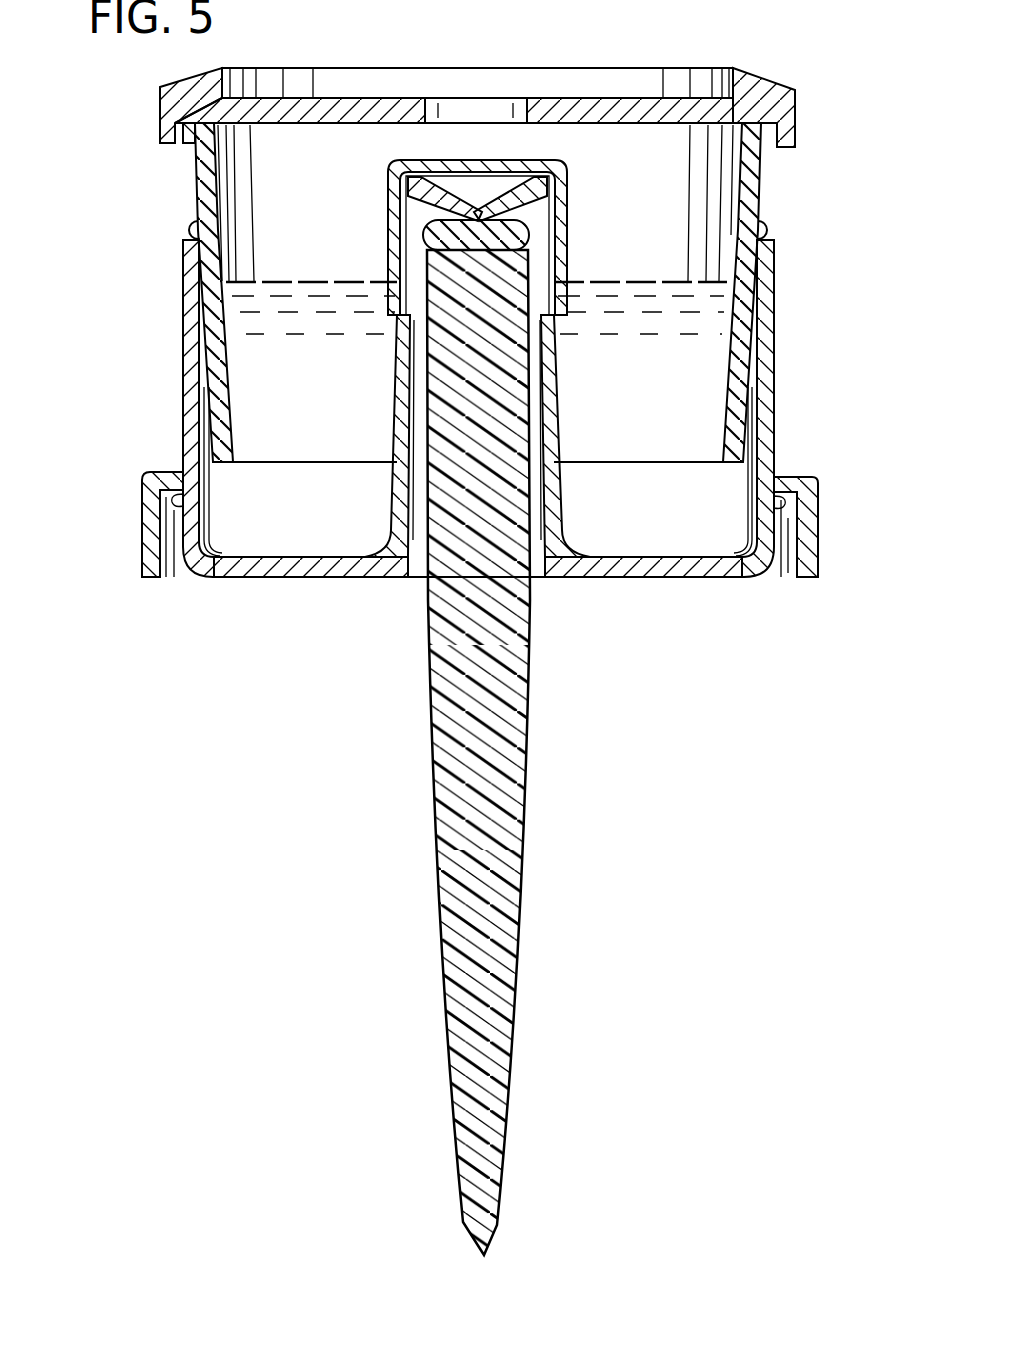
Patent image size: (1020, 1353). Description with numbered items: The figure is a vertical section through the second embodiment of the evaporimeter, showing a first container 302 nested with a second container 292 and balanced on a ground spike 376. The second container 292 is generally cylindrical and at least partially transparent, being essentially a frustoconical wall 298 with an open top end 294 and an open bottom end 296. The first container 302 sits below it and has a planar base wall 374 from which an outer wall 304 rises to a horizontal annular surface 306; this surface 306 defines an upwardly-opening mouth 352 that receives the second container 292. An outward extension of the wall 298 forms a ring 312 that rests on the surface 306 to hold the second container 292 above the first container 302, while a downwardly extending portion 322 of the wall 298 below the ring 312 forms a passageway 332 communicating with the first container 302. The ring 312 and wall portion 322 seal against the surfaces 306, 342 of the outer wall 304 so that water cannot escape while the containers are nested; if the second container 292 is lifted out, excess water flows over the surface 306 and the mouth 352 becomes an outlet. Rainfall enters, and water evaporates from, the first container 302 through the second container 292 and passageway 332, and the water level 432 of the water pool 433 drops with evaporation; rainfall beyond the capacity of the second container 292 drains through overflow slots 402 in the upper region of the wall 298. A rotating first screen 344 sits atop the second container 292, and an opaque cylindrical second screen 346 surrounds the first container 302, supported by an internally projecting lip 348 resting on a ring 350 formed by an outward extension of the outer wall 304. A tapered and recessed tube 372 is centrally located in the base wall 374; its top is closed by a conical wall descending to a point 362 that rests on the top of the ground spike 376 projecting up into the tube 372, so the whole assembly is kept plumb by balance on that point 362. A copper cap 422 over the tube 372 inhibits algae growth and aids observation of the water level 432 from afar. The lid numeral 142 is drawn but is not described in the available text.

The lid 142 is at (330, 98).
The top end 294 is at (480, 100).
The rotating first screen 344 is at (160, 123).
The overflow slots 402 is at (195, 158).
The second container 292 is at (760, 171).
The frustoconical wall 298 is at (750, 198).
The ring 312 is at (193, 228).
The mouth 352 is at (190, 238).
The surface 342 is at (222, 255).
The water level 432 is at (331, 281).
The copper cap 422 is at (477, 162).
The point 362 is at (475, 222).
The horizontal annular surface 306 is at (757, 245).
The outer wall 304 is at (190, 303).
The downwardly extending portion 322 is at (212, 345).
The internally projecting lip 348 is at (178, 490).
The first container 302 is at (776, 440).
The second screen 346 is at (143, 540).
The passageway 332 is at (243, 440).
The tapered and recessed tube 372 is at (397, 406).
The water pool 433 is at (622, 415).
The bottom end 296 is at (660, 465).
The ring 350 is at (183, 578).
The planar base wall 374 is at (292, 578).
The ground spike 376 is at (434, 887).